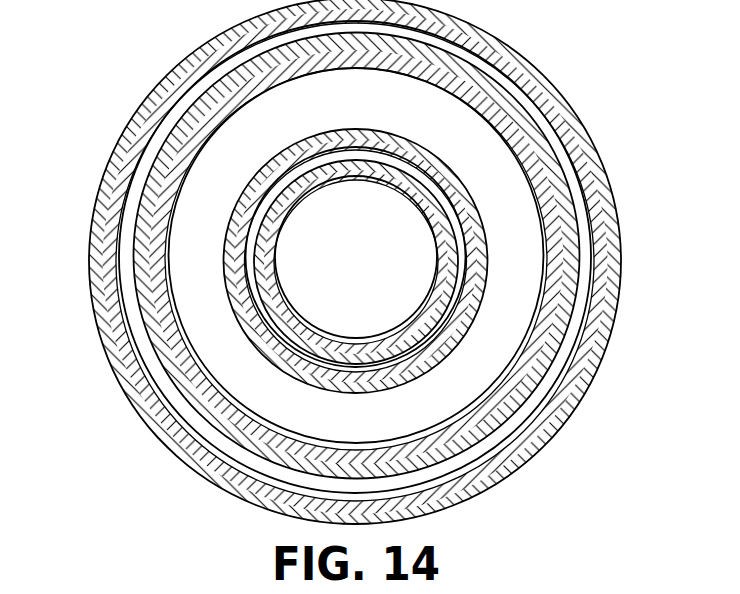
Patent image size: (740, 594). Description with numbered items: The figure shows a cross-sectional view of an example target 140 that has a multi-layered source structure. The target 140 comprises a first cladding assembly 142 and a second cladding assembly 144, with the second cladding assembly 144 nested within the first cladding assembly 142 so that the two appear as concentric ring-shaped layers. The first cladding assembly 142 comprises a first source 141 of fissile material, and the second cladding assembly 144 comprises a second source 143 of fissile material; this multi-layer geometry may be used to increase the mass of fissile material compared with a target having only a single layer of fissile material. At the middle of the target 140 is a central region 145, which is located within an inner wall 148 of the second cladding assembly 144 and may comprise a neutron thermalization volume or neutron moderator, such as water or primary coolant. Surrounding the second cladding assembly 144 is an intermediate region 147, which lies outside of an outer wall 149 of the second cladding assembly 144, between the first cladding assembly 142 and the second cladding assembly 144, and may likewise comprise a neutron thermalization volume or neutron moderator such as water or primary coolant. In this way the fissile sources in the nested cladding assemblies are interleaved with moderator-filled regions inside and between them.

The target 140 is at (124, 73).
The first source 141 is at (503, 393).
The first cladding assembly 142 is at (565, 88).
The second source 143 is at (268, 167).
The second cladding assembly 144 is at (345, 394).
The central region 145 is at (368, 266).
The intermediate region 147 is at (367, 112).
The inner wall 148 is at (307, 325).
The outer wall 149 is at (457, 204).